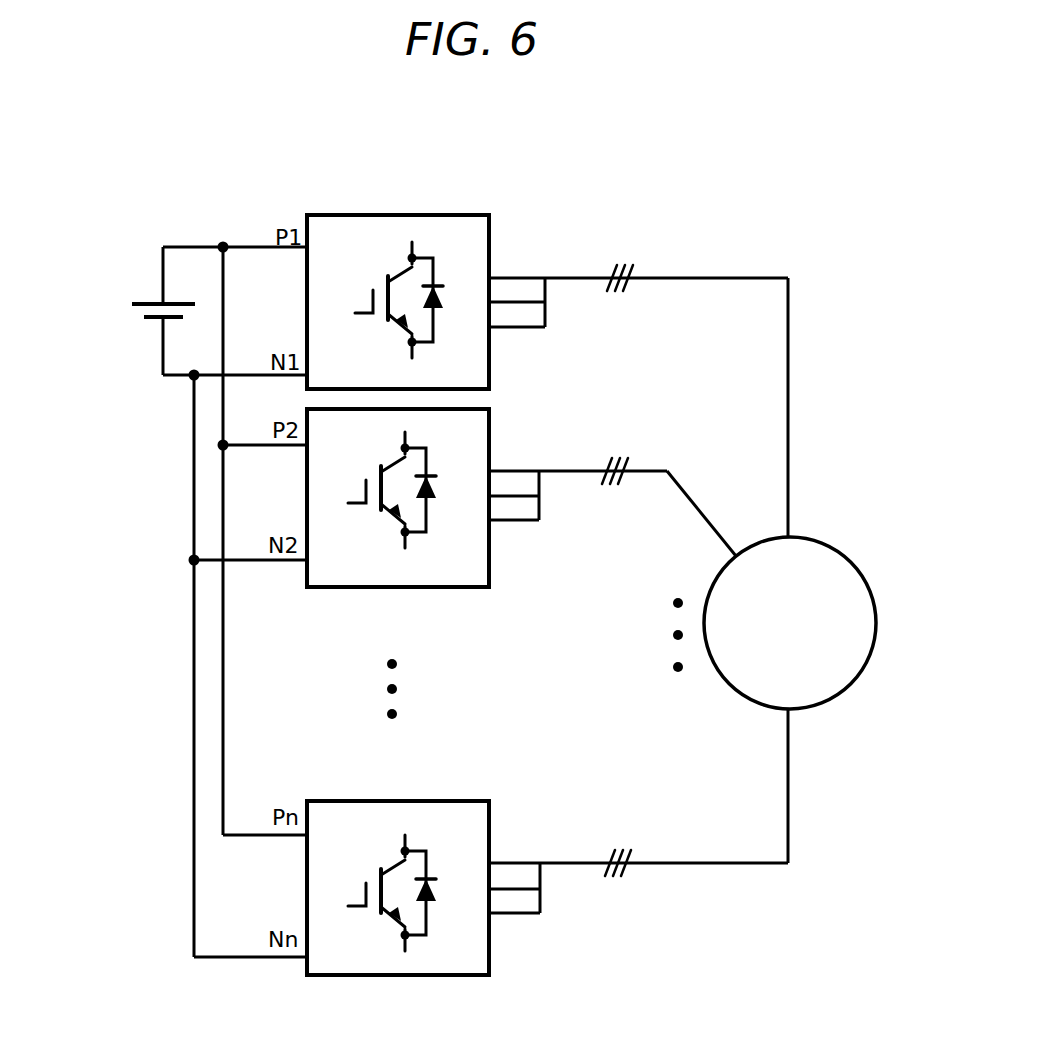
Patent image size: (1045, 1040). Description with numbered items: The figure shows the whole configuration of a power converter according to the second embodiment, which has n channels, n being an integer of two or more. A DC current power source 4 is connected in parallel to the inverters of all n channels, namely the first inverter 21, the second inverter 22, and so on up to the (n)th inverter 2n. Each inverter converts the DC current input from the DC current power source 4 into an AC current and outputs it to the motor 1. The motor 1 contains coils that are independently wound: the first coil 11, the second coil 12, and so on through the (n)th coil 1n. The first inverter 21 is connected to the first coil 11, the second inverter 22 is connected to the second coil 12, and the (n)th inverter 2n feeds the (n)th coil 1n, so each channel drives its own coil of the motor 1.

The DC current power source 4 is at (177, 256).
The first inverter 21 is at (491, 245).
The second inverter 22 is at (490, 455).
The (n)th inverter 2n is at (488, 933).
The first coil 11 is at (705, 401).
The second coil 12 is at (612, 527).
The (n)th coil 1n is at (709, 811).
The motor 1 is at (790, 623).